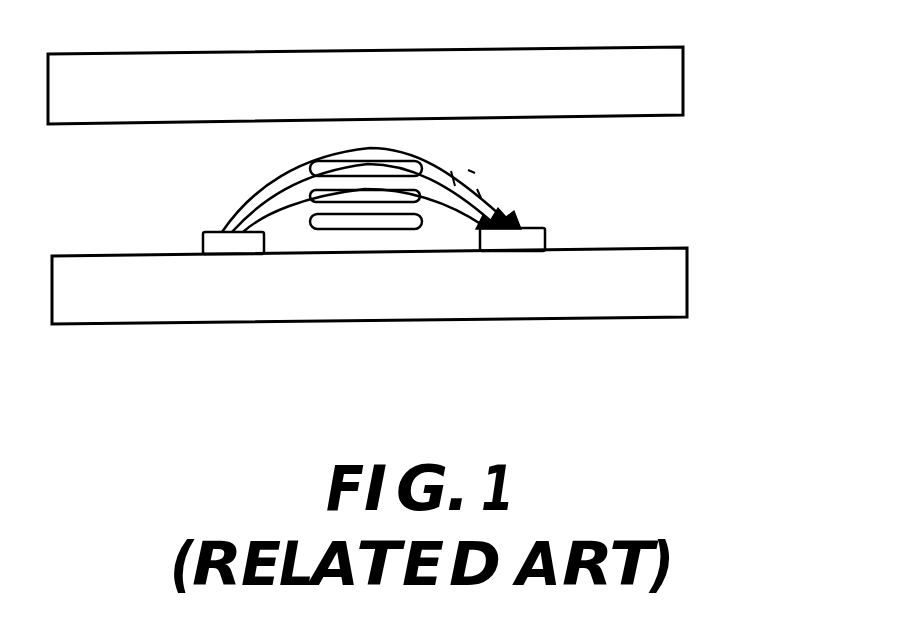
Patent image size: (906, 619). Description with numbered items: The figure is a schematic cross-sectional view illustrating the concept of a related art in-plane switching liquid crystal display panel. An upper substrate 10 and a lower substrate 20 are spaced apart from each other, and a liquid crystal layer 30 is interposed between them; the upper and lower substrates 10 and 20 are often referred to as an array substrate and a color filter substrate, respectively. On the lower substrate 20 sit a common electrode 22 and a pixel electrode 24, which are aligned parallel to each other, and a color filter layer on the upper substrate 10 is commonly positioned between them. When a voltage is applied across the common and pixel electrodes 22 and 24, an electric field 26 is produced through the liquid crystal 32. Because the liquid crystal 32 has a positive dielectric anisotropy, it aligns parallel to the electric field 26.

The upper substrate 10 is at (713, 42).
The lower substrate 20 is at (713, 245).
The liquid crystal layer 30 is at (713, 112).
The common electrode 22 is at (230, 245).
The pixel electrode 24 is at (523, 238).
The electric field 26 is at (447, 212).
The liquid crystal 32 is at (347, 228).